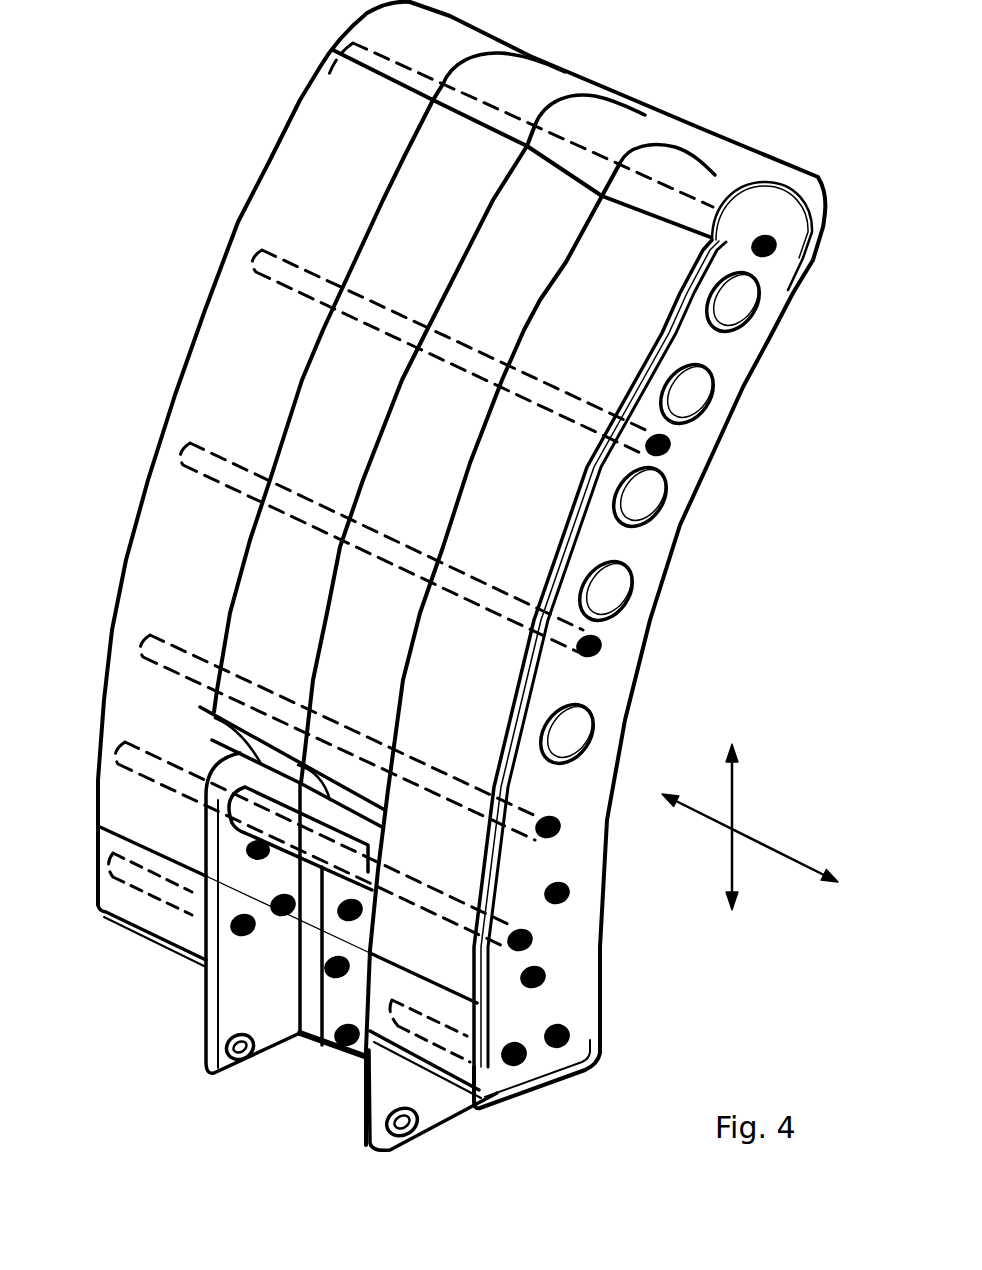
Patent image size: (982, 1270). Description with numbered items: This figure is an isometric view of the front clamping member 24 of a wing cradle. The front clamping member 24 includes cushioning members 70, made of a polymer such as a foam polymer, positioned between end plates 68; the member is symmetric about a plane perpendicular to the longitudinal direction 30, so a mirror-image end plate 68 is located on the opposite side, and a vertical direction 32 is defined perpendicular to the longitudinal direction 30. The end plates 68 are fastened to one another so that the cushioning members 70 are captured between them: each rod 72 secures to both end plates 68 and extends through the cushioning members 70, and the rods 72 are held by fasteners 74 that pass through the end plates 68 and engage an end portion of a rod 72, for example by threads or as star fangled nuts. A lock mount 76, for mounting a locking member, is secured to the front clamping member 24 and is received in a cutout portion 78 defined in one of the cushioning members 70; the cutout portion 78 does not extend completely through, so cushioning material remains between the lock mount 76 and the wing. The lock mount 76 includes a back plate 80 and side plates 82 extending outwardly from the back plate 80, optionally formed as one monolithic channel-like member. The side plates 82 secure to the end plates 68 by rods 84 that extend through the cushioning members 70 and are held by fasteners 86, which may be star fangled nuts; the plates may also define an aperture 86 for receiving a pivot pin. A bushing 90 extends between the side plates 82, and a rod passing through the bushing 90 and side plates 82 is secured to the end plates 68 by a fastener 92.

The front clamping member 24 is at (228, 178).
The longitudinal direction 30 is at (750, 840).
The vertical direction 32 is at (732, 800).
The end plate 68 is at (610, 697).
The cushioning member 70 is at (680, 167).
The rod 72 is at (327, 80).
The fastener 74 is at (770, 257).
The lock mount 76 is at (188, 1003).
The cutout portion 78 is at (213, 713).
The back plate 80 is at (355, 1011).
The side plate 82 is at (270, 989).
The rod 84 is at (170, 906).
The fastener 86 is at (282, 913).
The bushing 90 is at (228, 828).
The fastener 92 is at (540, 946).